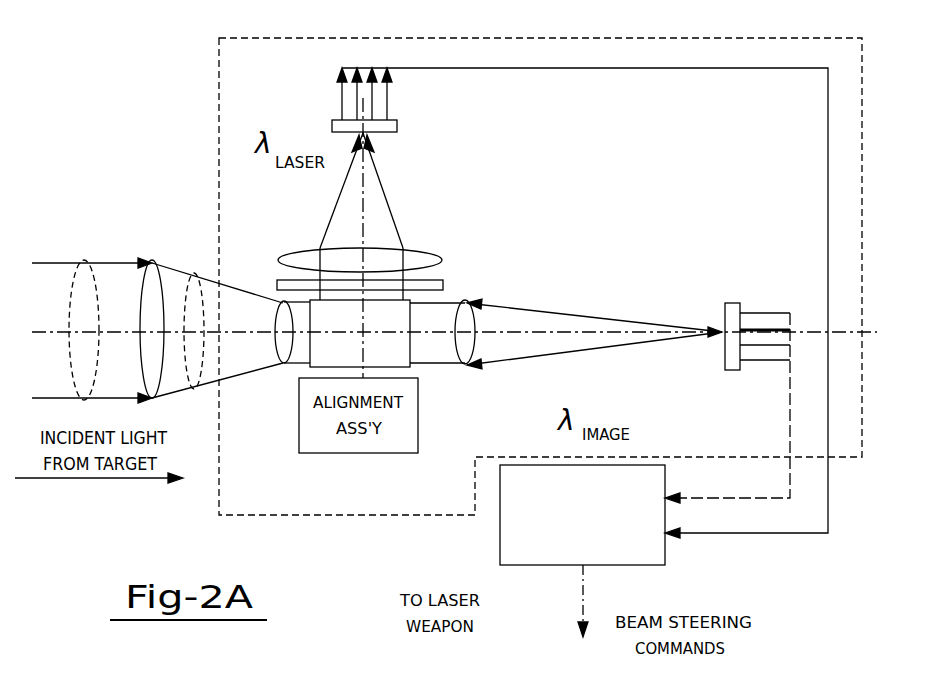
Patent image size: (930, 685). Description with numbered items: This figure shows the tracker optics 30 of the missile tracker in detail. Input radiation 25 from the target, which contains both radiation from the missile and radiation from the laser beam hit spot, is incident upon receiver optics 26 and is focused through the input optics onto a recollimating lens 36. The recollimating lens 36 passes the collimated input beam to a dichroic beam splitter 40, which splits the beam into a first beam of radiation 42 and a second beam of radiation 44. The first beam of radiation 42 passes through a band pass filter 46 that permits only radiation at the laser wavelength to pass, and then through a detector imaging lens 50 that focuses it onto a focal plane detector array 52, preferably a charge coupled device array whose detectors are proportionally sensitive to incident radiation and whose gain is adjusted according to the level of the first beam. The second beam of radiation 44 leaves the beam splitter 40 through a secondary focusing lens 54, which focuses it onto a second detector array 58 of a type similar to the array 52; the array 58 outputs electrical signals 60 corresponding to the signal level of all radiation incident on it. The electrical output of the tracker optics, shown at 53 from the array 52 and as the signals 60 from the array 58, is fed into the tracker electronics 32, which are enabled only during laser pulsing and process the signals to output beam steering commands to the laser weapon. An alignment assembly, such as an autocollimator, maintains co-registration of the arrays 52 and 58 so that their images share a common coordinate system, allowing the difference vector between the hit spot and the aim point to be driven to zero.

The input radiation 25 is at (85, 262).
The receiver optics 26 is at (152, 260).
The tracker optics 30 is at (537, 38).
The tracker electronics 32 is at (500, 528).
The recollimating lens 36 is at (284, 363).
The dichroic beam splitter 40 is at (403, 322).
The first beam of radiation 42 is at (378, 160).
The second beam of radiation 44 is at (582, 315).
The band pass filter 46 is at (443, 280).
The detector imaging lens 50 is at (305, 252).
The focal plane detector array 52 is at (397, 128).
The detector signal line 53 is at (615, 68).
The secondary focusing lens 54 is at (465, 367).
The second detector array 58 is at (725, 325).
The electrical signals 60 is at (789, 413).